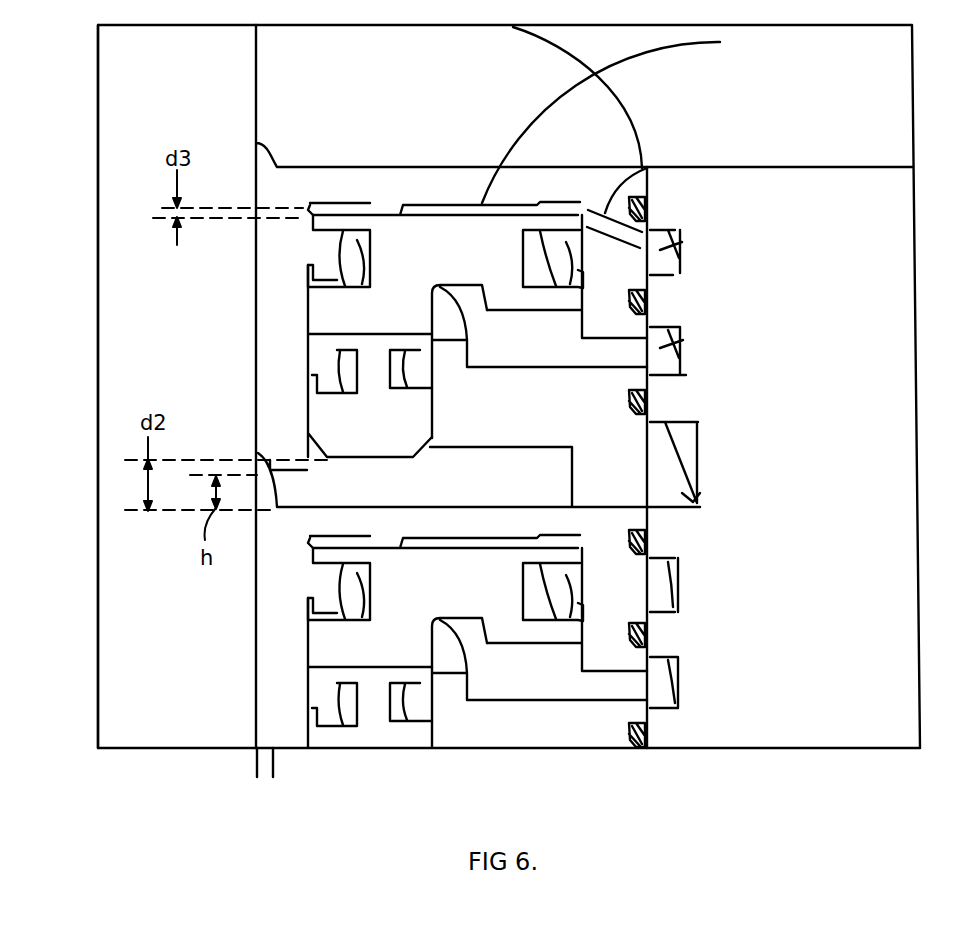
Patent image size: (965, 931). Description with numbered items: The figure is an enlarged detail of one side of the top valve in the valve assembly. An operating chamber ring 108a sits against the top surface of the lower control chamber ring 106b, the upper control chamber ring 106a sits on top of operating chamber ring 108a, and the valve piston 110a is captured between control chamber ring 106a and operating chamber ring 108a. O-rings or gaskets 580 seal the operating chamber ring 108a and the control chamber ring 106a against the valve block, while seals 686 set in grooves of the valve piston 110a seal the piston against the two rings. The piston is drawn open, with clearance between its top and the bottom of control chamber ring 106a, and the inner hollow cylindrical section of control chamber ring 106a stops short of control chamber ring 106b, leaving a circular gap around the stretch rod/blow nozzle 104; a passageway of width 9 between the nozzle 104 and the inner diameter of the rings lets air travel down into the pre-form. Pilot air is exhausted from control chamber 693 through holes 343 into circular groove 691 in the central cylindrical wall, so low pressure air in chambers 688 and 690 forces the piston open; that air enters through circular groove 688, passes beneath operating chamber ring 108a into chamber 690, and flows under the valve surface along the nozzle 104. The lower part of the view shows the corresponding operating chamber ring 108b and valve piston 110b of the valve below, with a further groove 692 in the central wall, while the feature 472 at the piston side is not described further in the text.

The gap 9 is at (233, 773).
The stretch rod/blow nozzle 104 is at (205, 752).
The control chamber ring 106a is at (620, 107).
The control chamber ring 106b is at (648, 593).
The operating chamber ring 108a is at (653, 480).
The second flap 108b is at (638, 707).
The valve piston 110a is at (437, 413).
The second passage 110b is at (538, 648).
The holes 343 is at (652, 173).
The piston block 472 is at (377, 337).
The O-rings or gaskets 580 is at (648, 197).
The seals 686 is at (337, 395).
The circular groove 688 is at (700, 507).
The chamber 690 is at (442, 487).
The circular groove 691 is at (678, 245).
The second bracket 692 is at (680, 337).
The control chamber 693 is at (631, 120).